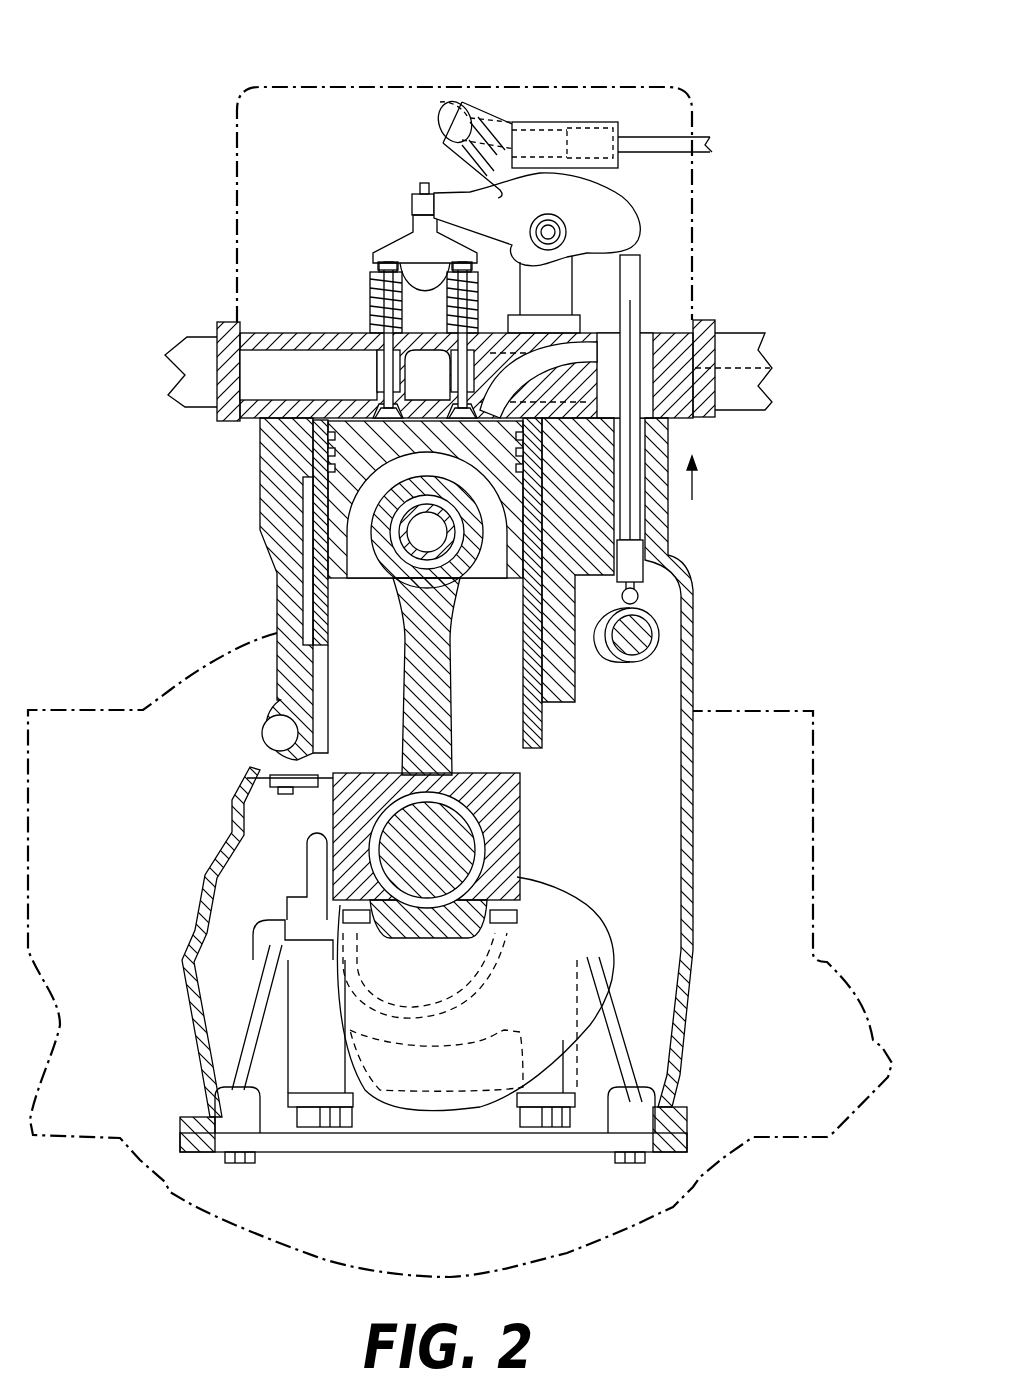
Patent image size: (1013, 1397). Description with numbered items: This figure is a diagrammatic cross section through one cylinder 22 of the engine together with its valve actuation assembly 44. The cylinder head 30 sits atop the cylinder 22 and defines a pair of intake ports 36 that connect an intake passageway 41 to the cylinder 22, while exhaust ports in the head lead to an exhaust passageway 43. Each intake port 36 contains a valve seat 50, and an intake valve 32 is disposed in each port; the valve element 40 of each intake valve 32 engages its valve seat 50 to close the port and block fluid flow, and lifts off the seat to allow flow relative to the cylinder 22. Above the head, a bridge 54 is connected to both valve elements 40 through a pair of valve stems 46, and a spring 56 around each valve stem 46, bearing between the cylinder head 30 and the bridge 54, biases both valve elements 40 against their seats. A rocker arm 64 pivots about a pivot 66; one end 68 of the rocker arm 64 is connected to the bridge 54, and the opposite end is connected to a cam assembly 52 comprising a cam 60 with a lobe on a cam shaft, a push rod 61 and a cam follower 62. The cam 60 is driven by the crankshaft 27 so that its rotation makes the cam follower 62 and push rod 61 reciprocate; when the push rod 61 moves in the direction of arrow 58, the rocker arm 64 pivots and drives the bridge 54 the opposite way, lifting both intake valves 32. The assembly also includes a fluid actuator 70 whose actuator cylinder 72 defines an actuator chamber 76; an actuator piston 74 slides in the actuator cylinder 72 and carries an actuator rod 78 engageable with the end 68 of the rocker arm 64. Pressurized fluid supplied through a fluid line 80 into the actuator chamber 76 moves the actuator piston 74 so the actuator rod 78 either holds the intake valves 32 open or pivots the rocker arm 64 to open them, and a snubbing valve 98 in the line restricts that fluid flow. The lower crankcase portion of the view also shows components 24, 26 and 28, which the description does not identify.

The cylinder 22 is at (330, 622).
The cylinder block 24 is at (327, 550).
The connecting rod 26 is at (452, 740).
The crankshaft 27 is at (570, 925).
The crankcase wall 28 is at (275, 667).
The cylinder head 30 is at (700, 410).
The intake valve 32 is at (384, 345).
The intake port 36 is at (375, 398).
The valve element 40 is at (460, 400).
The intake passageway 41 is at (250, 372).
The exhaust passageway 43 is at (770, 362).
The valve actuation assembly 44 is at (746, 84).
The valve stem 46 is at (370, 305).
The valve seat 50 is at (328, 462).
The cam assembly 52 is at (796, 520).
The bridge 54 is at (400, 238).
The spring 56 is at (372, 262).
The arrow 58 is at (694, 490).
The cam 60 is at (603, 662).
The push rod 61 is at (640, 517).
The cam follower 62 is at (640, 595).
The rocker arm 64 is at (608, 212).
The pivot 66 is at (557, 222).
The end 68 is at (420, 183).
The fluid actuator 70 is at (551, 88).
The actuator cylinder 72 is at (440, 102).
The actuator piston 74 is at (460, 102).
The actuator chamber 76 is at (515, 125).
The actuator rod 78 is at (453, 190).
The fluid line 80 is at (622, 128).
The snubbing valve 98 is at (590, 126).